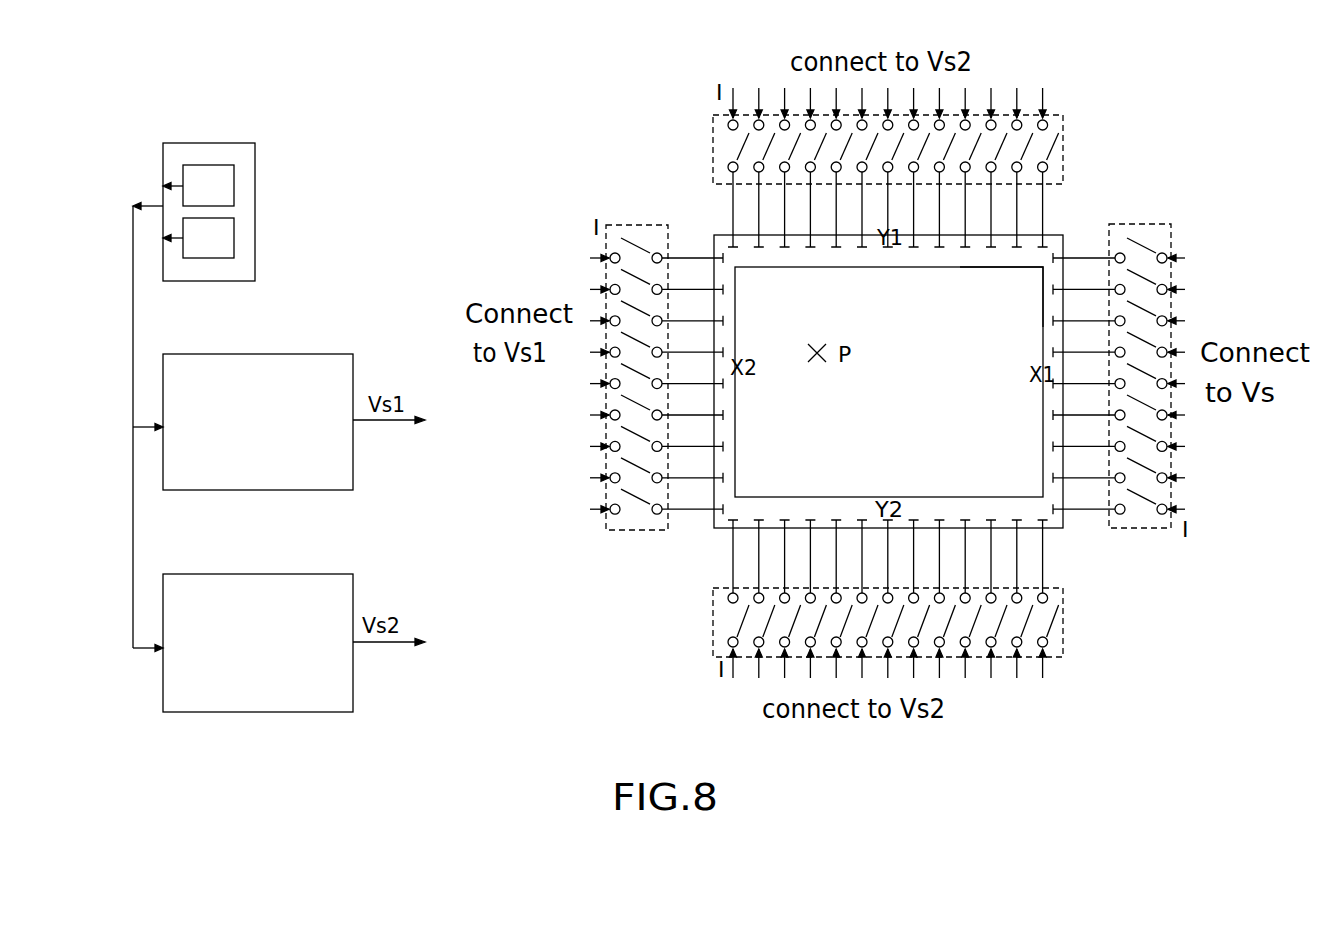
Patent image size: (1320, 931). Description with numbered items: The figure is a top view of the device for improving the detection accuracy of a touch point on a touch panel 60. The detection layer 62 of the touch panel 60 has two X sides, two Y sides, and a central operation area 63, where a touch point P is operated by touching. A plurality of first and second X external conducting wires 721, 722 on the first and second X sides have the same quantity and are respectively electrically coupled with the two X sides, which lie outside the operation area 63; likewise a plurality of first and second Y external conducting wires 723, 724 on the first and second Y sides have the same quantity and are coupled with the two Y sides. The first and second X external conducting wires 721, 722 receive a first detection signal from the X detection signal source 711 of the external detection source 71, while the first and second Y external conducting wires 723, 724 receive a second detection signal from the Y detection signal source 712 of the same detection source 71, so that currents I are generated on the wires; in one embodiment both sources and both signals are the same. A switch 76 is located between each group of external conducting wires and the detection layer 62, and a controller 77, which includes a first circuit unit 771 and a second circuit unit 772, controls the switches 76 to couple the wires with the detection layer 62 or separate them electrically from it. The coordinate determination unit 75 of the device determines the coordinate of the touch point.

The touch panel 60 is at (748, 498).
The detection layer 62 is at (725, 530).
The operation area 63 is at (1012, 288).
The detection source 71 is at (329, 533).
The X detection signal source 711 is at (353, 457).
The Y detection signal source 712 is at (353, 583).
The first X external conducting wires 721 is at (1073, 478).
The second X external conducting wires 722 is at (682, 512).
The first Y external conducting wires 723 is at (1045, 192).
The second Y external conducting wires 724 is at (1053, 657).
The coordinate determination unit 75 is at (1065, 597).
The switch 76 is at (628, 226).
The controller 77 is at (220, 201).
The first circuit unit 771 is at (198, 185).
The second circuit unit 772 is at (198, 238).